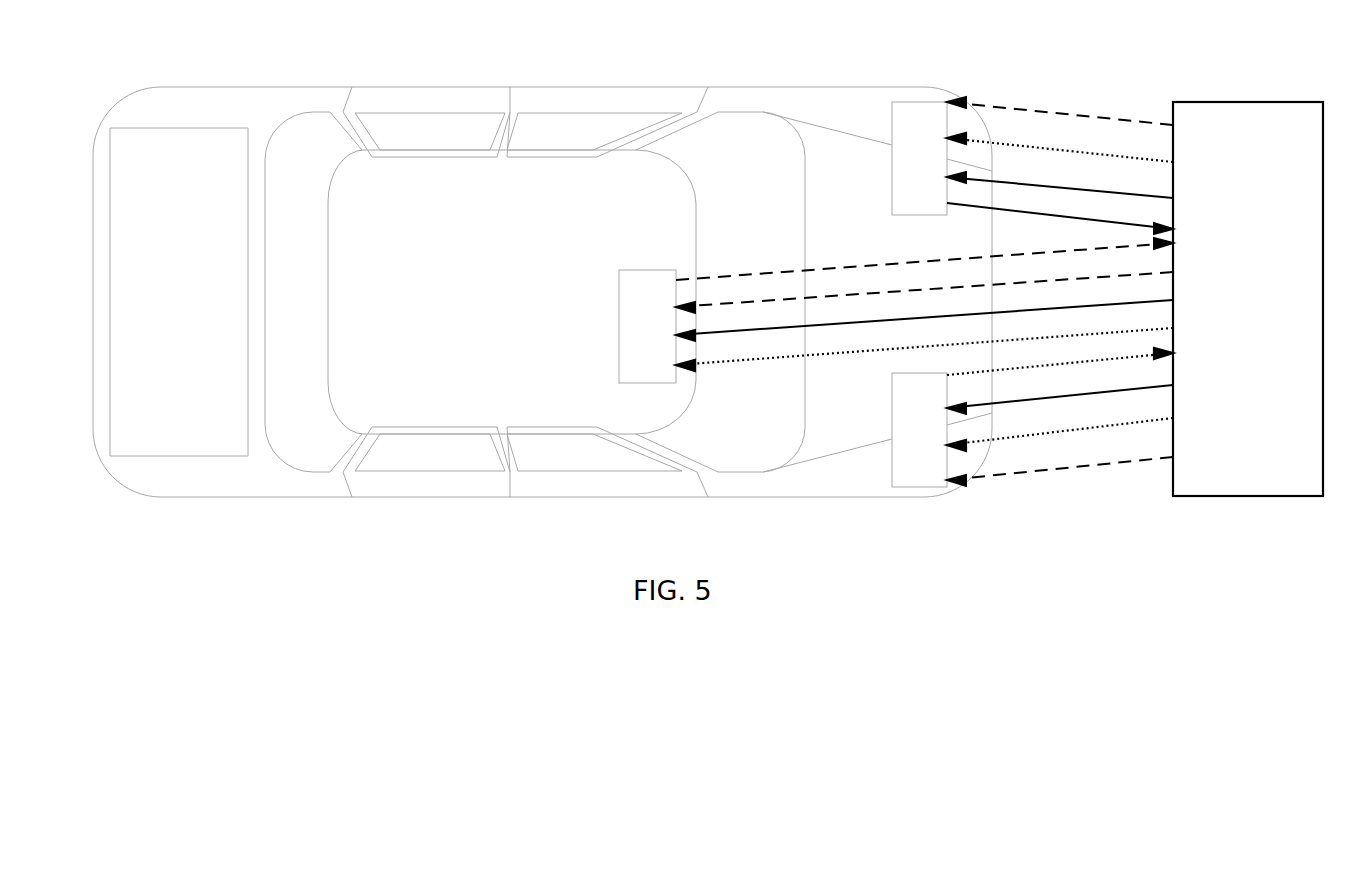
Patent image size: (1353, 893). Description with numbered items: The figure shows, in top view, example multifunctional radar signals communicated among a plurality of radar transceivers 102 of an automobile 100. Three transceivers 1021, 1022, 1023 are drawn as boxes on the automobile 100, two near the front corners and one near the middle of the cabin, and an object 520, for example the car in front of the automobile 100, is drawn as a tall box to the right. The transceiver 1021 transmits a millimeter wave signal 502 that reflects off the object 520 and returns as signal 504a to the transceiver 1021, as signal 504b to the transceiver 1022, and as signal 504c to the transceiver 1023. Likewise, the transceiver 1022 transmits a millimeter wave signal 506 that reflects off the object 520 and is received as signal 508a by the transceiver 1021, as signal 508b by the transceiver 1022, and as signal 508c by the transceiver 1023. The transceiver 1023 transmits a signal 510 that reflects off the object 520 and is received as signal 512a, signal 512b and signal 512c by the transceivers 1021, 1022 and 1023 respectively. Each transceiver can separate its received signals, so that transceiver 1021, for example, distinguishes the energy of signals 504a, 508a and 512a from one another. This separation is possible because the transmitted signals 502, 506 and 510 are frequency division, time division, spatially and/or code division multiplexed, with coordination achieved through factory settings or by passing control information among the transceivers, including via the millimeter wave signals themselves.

The automobile 100 is at (330, 87).
The radar transceivers 102 is at (783, 294).
The first transceiver 1021 is at (945, 168).
The second transceiver 1022 is at (672, 336).
The third transceiver 1023 is at (945, 439).
The object 520 is at (1270, 310).
The millimeter wave signal 502 is at (1055, 215).
The signal 504a is at (1031, 184).
The signal 504b is at (831, 325).
The signal 504c is at (1029, 400).
The millimeter wave signal 506 is at (858, 267).
The signal 508a is at (1046, 113).
The signal 508b is at (909, 291).
The signal 508c is at (1044, 471).
The signal 510 is at (1066, 364).
The signal 512a is at (1070, 153).
The signal 512b is at (869, 351).
The signal 512c is at (1084, 429).